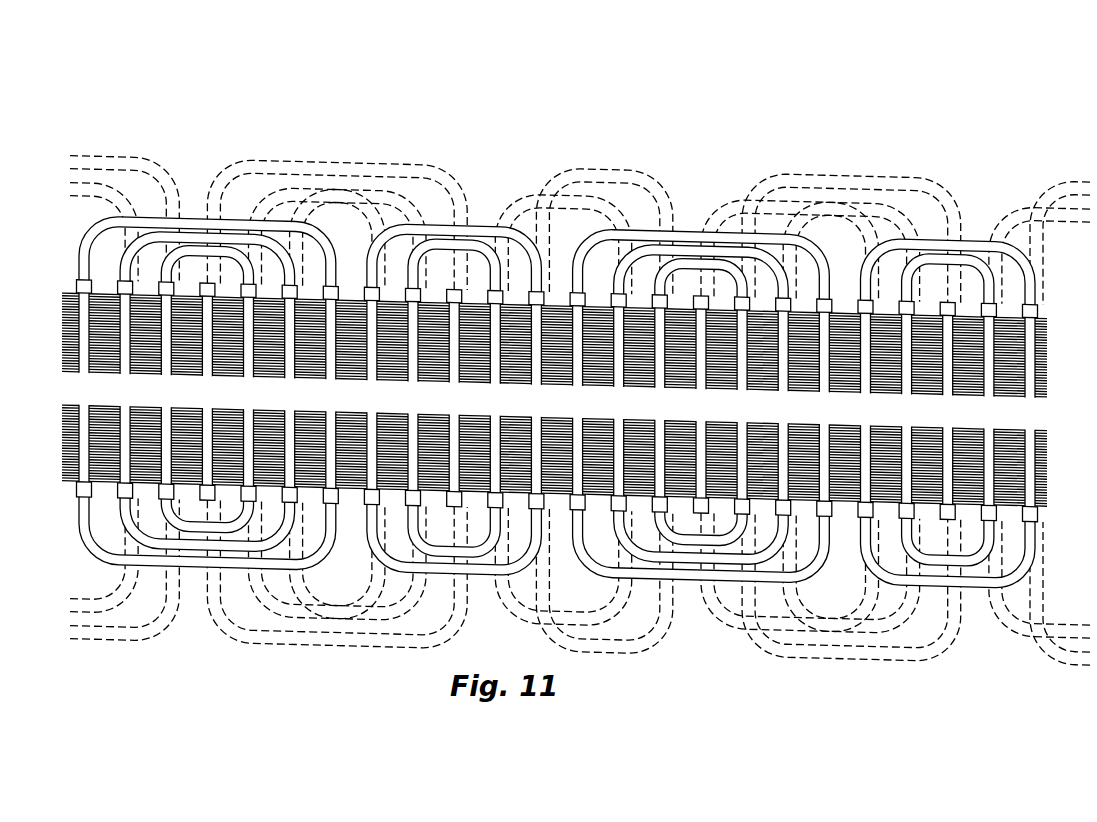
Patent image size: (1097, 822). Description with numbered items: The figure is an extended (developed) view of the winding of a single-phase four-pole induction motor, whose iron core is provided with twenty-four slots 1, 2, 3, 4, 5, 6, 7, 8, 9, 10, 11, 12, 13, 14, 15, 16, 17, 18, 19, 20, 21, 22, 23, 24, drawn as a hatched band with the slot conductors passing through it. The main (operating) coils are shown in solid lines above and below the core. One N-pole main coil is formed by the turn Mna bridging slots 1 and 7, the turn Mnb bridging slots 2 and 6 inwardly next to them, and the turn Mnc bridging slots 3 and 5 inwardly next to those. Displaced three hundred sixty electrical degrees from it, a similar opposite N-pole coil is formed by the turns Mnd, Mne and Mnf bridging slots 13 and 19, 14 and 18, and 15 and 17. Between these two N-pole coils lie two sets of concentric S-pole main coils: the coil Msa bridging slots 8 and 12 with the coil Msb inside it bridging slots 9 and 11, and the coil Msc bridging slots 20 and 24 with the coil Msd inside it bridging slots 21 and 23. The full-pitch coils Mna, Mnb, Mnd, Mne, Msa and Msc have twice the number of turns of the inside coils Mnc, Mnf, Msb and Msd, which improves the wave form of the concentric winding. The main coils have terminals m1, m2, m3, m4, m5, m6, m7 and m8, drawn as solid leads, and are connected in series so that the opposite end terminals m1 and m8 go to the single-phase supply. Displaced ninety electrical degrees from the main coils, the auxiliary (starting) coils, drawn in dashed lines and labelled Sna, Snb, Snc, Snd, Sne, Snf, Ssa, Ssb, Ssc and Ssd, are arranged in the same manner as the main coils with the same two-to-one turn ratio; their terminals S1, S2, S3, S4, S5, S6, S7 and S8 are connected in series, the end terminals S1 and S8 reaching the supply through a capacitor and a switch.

The slot 1 is at (84, 388).
The slot 2 is at (125, 389).
The slot 3 is at (166, 390).
The slot 4 is at (207, 391).
The slot 5 is at (248, 392).
The slot 6 is at (290, 393).
The slot 7 is at (331, 394).
The slot 8 is at (372, 395).
The slot 9 is at (413, 396).
The slot 10 is at (451, 398).
The slot 11 is at (492, 399).
The slot 12 is at (533, 400).
The slot 13 is at (575, 401).
The slot 14 is at (616, 403).
The slot 15 is at (657, 404).
The slot 16 is at (698, 405).
The slot 17 is at (740, 406).
The slot 18 is at (780, 407).
The slot 19 is at (821, 408).
The slot 20 is at (862, 409).
The slot 21 is at (904, 410).
The slot 22 is at (945, 411).
The slot 23 is at (986, 412).
The slot 24 is at (1027, 413).
The main-coil turn Mna is at (132, 558).
The main-coil turn Mnb is at (160, 545).
The main-coil turn Mnc is at (185, 532).
The main-coil turn Mnd is at (641, 580).
The main-coil turn Mne is at (680, 562).
The main-coil turn Mnf is at (710, 548).
The S-pole main coil Msa is at (432, 570).
The S-pole main coil Msb is at (465, 555).
The S-pole main coil Msc is at (925, 583).
The S-pole main coil Msd is at (952, 570).
The starting winding north pole coil a Sna is at (357, 623).
The starting winding north pole coil b Snb is at (302, 610).
The starting winding north pole coil c Snc is at (340, 598).
The starting winding north pole coil d Snd is at (852, 643).
The starting winding north pole coil e Sne is at (805, 630).
The starting winding north pole coil f Snf is at (840, 613).
The starting winding south pole coil a Ssa is at (563, 633).
The starting winding south pole coil b Ssb is at (583, 613).
The starting winding south pole coil c Ssc is at (75, 617).
The starting winding south pole coil d Ssd is at (80, 603).
The main coil terminal m1 is at (92, 280).
The main coil terminal m2 is at (256, 284).
The main coil terminal m3 is at (503, 291).
The main coil terminal m4 is at (376, 288).
The main coil terminal m5 is at (586, 293).
The main coil terminal m6 is at (750, 297).
The main coil terminal m7 is at (997, 304).
The main coil terminal m8 is at (876, 301).
The auxiliary coil terminal S1 is at (214, 283).
The auxiliary coil terminal S2 is at (381, 288).
The auxiliary coil terminal S3 is at (625, 294).
The auxiliary coil terminal S4 is at (510, 291).
The auxiliary coil terminal S5 is at (708, 296).
The auxiliary coil terminal S6 is at (871, 300).
The auxiliary coil terminal S7 is at (132, 280).
The auxiliary coil terminal S8 is at (1001, 304).